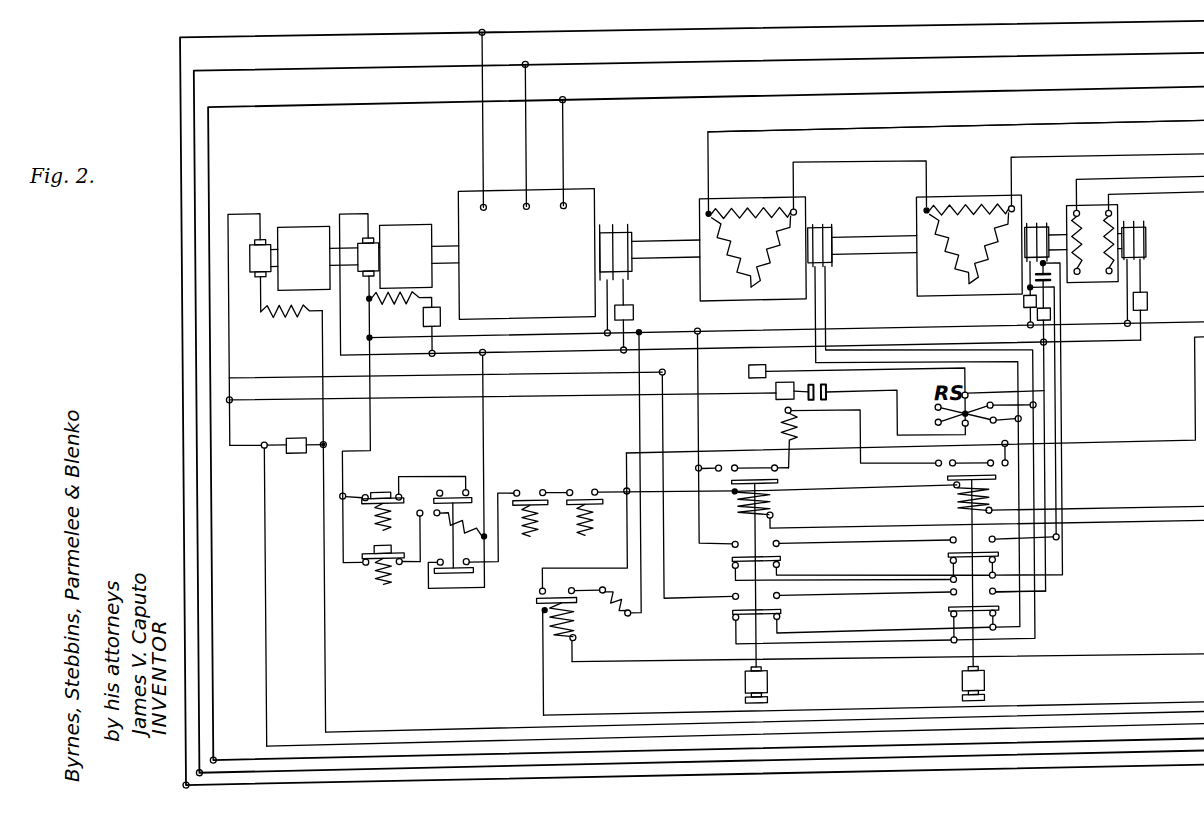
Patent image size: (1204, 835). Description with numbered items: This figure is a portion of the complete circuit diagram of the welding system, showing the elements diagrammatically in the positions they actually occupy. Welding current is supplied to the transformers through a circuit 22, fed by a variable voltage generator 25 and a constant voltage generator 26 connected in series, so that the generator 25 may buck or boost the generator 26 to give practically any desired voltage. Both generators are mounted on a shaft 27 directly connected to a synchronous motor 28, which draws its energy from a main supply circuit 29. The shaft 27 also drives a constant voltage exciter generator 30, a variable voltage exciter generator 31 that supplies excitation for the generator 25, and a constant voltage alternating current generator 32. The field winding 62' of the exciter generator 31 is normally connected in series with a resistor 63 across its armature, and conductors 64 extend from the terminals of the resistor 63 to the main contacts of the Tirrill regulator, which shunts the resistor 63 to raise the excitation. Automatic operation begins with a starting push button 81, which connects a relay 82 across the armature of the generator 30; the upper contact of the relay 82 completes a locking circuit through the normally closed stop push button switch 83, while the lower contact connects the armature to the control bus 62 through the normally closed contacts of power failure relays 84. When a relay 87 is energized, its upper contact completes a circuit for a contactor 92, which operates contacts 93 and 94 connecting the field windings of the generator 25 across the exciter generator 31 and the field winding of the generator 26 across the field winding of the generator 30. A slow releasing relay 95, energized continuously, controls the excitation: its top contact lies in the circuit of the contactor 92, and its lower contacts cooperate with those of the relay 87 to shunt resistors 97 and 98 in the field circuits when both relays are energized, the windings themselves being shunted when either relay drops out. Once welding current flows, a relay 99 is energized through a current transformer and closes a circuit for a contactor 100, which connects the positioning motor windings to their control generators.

The circuit 22 is at (1110, 165).
The variable voltage generator 25 is at (744, 208).
The constant voltage generator 26 is at (957, 209).
The shaft 27 is at (864, 249).
The synchronous motor 28 is at (583, 190).
The main supply circuit 29 is at (366, 31).
The exciter generator 30 is at (403, 228).
The exciter generator 31 is at (296, 228).
The constant voltage alternating current generator 32 is at (1121, 218).
The control bus 62 is at (915, 395).
The field winding 62' is at (292, 327).
The resistor 63 is at (299, 432).
The conductors 64 is at (1138, 736).
The starting push button 81 is at (398, 548).
The relay 82 is at (464, 520).
The stop push button switch 83 is at (372, 488).
The power failure relays 84 is at (580, 497).
The relay 87 is at (957, 507).
The contactor 92 is at (792, 430).
The contacts 93 is at (826, 390).
The contacts 94 is at (1053, 289).
The relay 95 is at (741, 505).
The resistor 97 is at (749, 371).
The resistor 98 is at (1024, 309).
The relay 99 is at (566, 625).
The contactor 100 is at (631, 606).